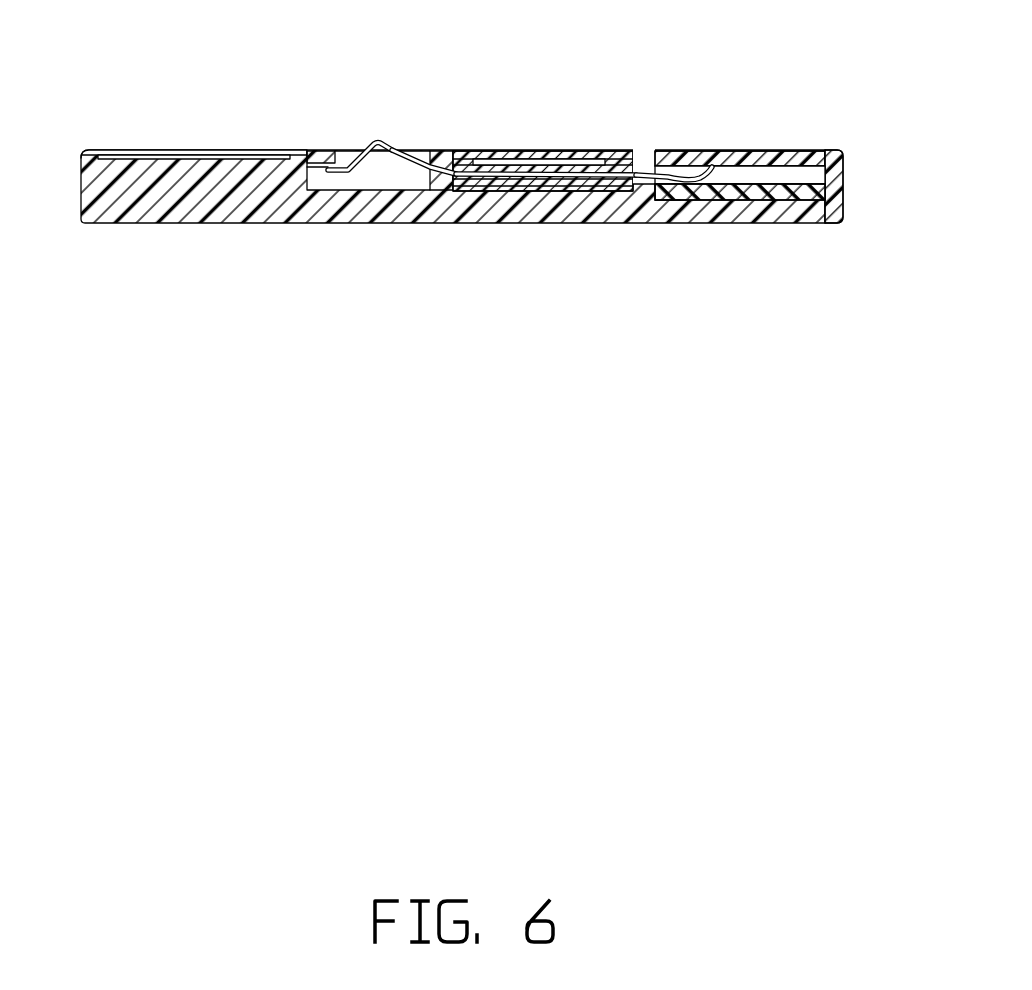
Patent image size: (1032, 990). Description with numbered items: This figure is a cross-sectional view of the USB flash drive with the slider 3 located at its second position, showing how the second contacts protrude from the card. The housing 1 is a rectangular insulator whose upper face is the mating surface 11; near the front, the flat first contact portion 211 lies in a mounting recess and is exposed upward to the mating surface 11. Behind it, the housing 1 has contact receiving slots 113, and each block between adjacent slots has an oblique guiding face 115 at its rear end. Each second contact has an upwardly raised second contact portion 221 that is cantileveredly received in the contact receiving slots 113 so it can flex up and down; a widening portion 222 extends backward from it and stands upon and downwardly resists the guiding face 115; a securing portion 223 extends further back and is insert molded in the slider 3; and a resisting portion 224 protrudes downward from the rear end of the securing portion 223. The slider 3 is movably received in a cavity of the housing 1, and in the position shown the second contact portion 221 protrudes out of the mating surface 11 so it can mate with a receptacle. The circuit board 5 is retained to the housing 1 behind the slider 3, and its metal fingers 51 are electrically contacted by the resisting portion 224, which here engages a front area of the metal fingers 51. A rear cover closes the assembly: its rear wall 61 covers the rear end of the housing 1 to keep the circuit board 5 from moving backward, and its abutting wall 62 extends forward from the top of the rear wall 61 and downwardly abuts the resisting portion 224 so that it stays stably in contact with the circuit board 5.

The housing 1 is at (200, 192).
The mating surface 11 is at (350, 150).
The contact receiving slots 113 is at (340, 183).
The oblique guiding face 115 is at (418, 178).
The first contact portion 211 is at (205, 151).
The second contact portion 221 is at (380, 143).
The widening portion 222 is at (455, 156).
The securing portion 223 is at (606, 158).
The resisting portion 224 is at (697, 171).
The slider 3 is at (558, 152).
The circuit board 5 is at (745, 196).
The metal fingers 51 is at (657, 200).
The rear wall 61 is at (790, 158).
The abutting wall 62 is at (836, 188).